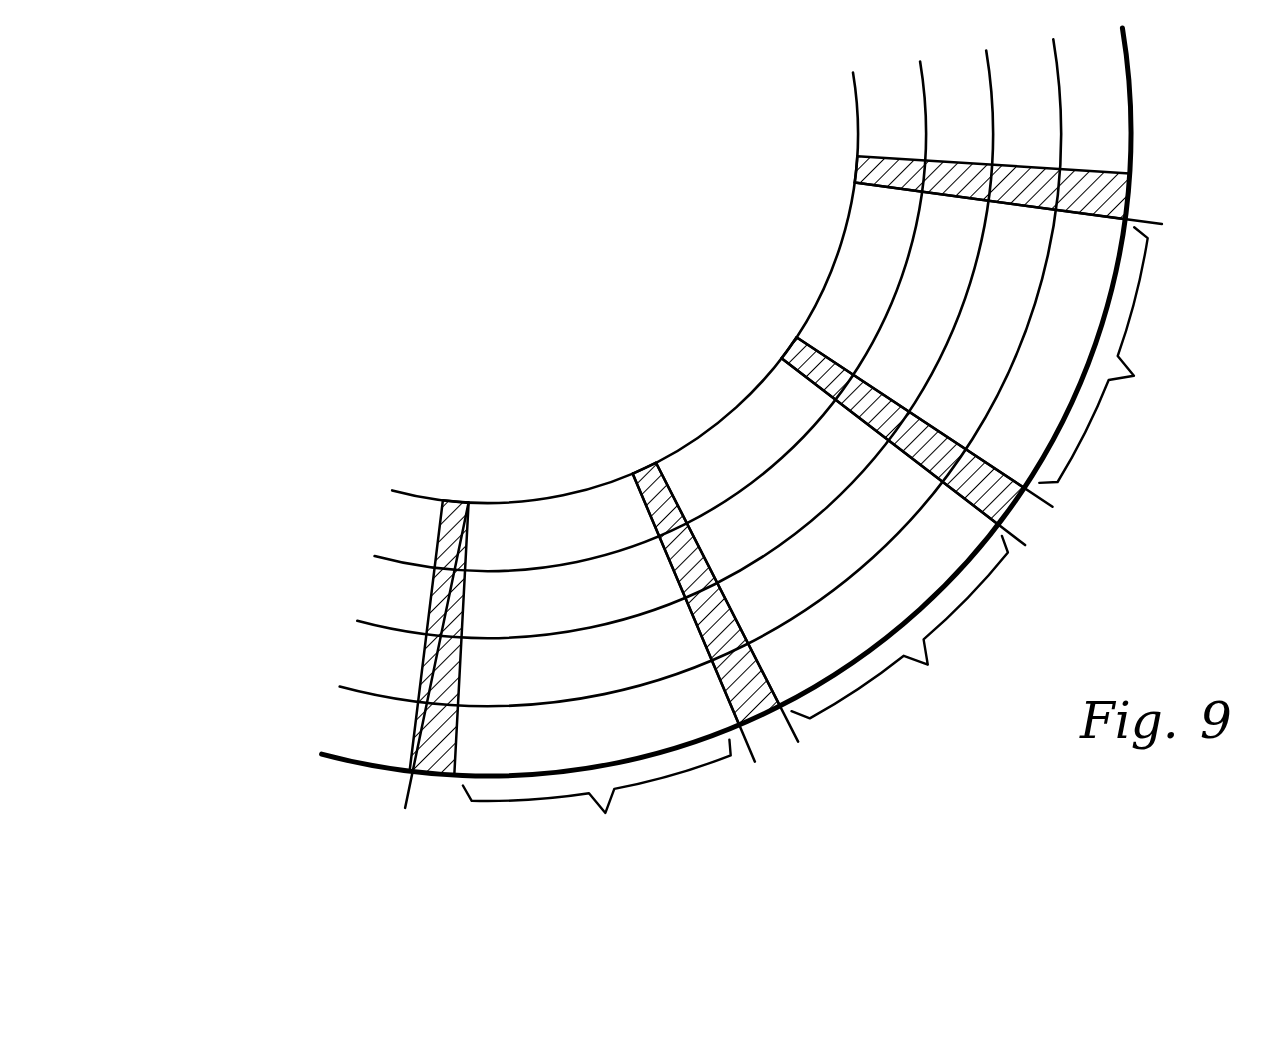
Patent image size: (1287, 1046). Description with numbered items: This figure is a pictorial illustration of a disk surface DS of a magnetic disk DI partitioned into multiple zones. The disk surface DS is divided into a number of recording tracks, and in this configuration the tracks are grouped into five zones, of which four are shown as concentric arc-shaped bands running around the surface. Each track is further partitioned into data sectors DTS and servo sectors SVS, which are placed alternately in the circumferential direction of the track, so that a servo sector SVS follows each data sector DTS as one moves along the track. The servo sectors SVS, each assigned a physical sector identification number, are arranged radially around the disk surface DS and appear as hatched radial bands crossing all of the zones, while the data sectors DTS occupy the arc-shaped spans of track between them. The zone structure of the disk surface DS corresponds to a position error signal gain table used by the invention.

The magnetic disk DI is at (341, 775).
The disk surface DS is at (1100, 135).
The servo sector SVS is at (778, 715).
The data sector DTS is at (831, 538).